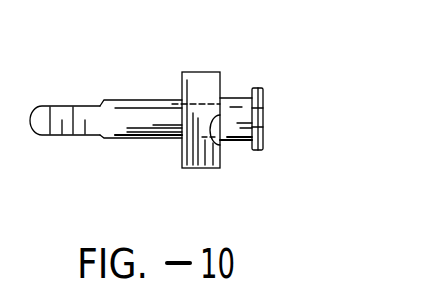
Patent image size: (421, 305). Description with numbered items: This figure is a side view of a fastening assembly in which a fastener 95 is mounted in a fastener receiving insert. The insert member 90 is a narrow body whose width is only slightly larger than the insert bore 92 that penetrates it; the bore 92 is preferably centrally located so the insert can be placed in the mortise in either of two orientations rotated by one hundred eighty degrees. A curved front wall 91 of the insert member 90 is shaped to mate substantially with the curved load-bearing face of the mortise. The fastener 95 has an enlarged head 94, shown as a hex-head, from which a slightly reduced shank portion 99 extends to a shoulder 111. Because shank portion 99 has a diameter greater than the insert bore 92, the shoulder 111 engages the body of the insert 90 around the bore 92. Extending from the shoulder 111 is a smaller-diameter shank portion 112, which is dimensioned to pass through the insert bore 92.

The insert member 90 is at (208, 183).
The curved front wall 91 is at (182, 78).
The insert bore 92 is at (173, 133).
The enlarged head 94 is at (257, 88).
The fastener 95 is at (123, 95).
The shank portion 99 is at (235, 98).
The shoulder 111 is at (220, 145).
The shank portion 112 is at (107, 138).